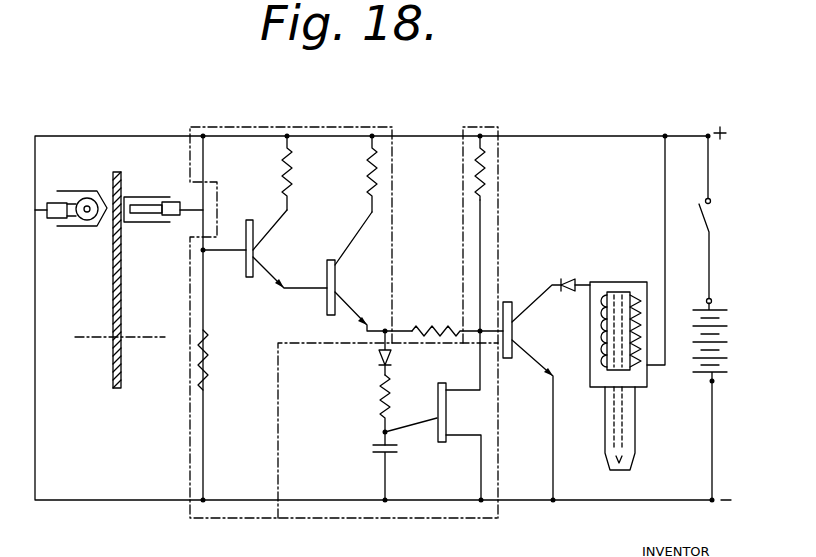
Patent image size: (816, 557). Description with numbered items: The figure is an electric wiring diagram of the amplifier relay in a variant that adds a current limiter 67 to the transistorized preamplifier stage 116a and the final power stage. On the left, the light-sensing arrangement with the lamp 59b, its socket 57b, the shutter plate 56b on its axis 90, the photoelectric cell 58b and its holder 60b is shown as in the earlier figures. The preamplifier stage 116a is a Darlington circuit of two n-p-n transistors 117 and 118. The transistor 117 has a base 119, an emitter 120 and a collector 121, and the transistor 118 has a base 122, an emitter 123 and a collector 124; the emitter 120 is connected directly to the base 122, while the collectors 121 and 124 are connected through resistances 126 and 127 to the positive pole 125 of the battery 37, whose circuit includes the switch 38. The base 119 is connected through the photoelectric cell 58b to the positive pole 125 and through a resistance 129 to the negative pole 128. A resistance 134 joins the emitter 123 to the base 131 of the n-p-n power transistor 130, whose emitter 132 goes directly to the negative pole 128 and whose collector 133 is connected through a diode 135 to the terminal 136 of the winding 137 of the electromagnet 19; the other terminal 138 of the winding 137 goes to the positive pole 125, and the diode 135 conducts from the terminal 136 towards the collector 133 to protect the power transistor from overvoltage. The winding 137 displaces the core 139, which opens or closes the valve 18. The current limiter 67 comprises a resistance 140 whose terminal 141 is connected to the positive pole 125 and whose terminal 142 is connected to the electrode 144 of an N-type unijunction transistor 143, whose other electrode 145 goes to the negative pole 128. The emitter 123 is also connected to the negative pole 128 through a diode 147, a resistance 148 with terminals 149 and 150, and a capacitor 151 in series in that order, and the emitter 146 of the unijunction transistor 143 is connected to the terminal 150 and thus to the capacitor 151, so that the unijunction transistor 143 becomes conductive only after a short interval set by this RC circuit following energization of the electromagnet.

The transistorized preamplifier stage 116a is at (264, 126).
The terminal of resistance 140 141 is at (478, 126).
The current limiter 67 is at (323, 518).
The lamp 59b is at (82, 197).
The lamp socket 57b is at (63, 225).
The shutter plate 56b is at (122, 275).
The axis 90 is at (114, 366).
The photoelectric cell 58b is at (153, 212).
The photocell holder 60b is at (152, 191).
The resistance 129 is at (206, 366).
The resistance 126 is at (283, 157).
The resistance 127 is at (368, 157).
The resistance 140 is at (478, 159).
The terminal of resistance 140 142 is at (479, 214).
The transistor 117 is at (250, 278).
The base 119 is at (245, 262).
The collector 121 is at (280, 221).
The emitter 120 is at (288, 255).
The transistor 118 is at (327, 263).
The base 122 is at (322, 289).
The collector 124 is at (356, 267).
The emitter 123 is at (377, 299).
The base 131 is at (468, 328).
The resistance 134 is at (428, 326).
The diode 147 is at (378, 357).
The terminal of resistance 148 149 is at (377, 373).
The resistance 148 is at (382, 398).
The terminal of resistance 148 150 is at (380, 432).
The capacitor 151 is at (373, 447).
The unijunction transistor 143 is at (438, 395).
The electrode 144 is at (468, 390).
The emitter 146 is at (434, 426).
The electrode 145 is at (468, 435).
The power transistor 130 is at (512, 353).
The collector 133 is at (542, 298).
The emitter 132 is at (552, 343).
The diode 135 is at (566, 279).
The terminal of winding 136 is at (583, 283).
The electromagnet 19 is at (643, 288).
The winding 137 is at (597, 307).
The core 139 is at (612, 367).
The terminal of winding 138 is at (651, 363).
The valve 18 is at (627, 445).
The switch 38 is at (694, 202).
The battery 37 is at (715, 320).
The positive pole 125 is at (689, 292).
The negative pole 128 is at (708, 385).